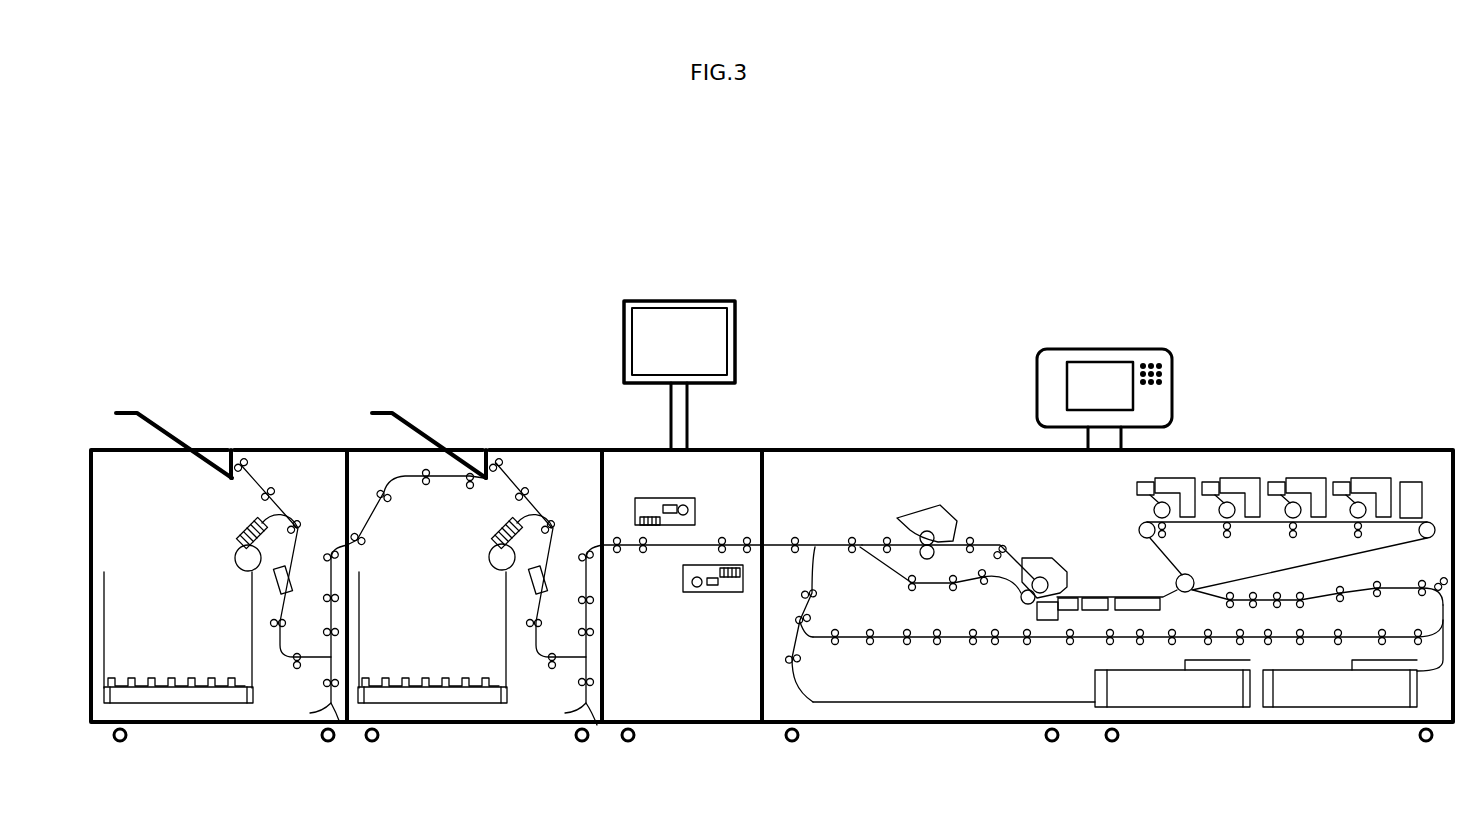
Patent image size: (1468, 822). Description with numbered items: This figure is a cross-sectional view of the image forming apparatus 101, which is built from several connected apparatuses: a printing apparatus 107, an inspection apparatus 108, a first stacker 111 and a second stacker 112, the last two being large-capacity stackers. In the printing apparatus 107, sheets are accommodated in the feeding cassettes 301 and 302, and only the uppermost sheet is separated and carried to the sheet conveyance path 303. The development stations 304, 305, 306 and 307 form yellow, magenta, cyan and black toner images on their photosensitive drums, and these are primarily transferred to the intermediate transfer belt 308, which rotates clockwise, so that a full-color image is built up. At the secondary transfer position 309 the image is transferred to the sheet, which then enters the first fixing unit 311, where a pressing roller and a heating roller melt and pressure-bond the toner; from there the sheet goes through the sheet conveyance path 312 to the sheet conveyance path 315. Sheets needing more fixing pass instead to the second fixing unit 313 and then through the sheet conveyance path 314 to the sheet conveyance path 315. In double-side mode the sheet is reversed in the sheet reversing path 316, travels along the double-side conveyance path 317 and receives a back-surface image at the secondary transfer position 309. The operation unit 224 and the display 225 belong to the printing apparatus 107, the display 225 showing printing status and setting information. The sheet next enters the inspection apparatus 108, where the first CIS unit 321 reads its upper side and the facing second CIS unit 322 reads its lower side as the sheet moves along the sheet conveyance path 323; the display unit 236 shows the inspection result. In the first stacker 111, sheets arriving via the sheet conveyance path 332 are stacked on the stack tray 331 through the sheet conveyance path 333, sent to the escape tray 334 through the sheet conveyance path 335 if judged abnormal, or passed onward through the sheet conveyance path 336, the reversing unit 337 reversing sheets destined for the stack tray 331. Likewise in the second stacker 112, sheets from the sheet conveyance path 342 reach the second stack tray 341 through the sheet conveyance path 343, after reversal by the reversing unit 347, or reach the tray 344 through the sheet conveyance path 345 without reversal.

The image forming apparatus 101 is at (265, 242).
The printing apparatus 107 is at (930, 723).
The inspection apparatus 108 is at (680, 723).
The first stacker 111 is at (430, 723).
The second stacker 112 is at (177, 723).
The operation unit 224 is at (1162, 373).
The display 225 is at (1068, 394).
The display unit 236 is at (678, 301).
The feeding cassette 301 is at (1183, 707).
The feeding cassette 302 is at (1340, 707).
The sheet conveyance path 303 is at (1360, 587).
The development station 304 is at (1408, 480).
The development station 305 is at (1402, 444).
The development station 306 is at (1330, 444).
The development station 307 is at (1178, 478).
The intermediate transfer belt 308 is at (1278, 576).
The secondary transfer position 309 is at (1177, 583).
The first fixing unit 311 is at (1038, 558).
The sheet conveyance path 312 is at (880, 562).
The second fixing unit 313 is at (922, 507).
The sheet conveyance path 314 is at (880, 543).
The sheet conveyance path 315 is at (777, 545).
The sheet reversing path 316 is at (832, 702).
The double-side conveyance path 317 is at (1055, 638).
The first CIS unit 321 is at (655, 498).
The second CIS unit 322 is at (712, 592).
The sheet conveyance path 323 is at (632, 550).
The stack tray 331 is at (360, 638).
The sheet conveyance path 332 is at (535, 657).
The sheet conveyance path 333 is at (525, 522).
The escape tray 334 is at (412, 427).
The sheet conveyance path 335 is at (514, 480).
The sheet conveyance path 336 is at (372, 515).
The reversing unit 337 is at (597, 725).
The second stack tray 341 is at (106, 638).
The sheet conveyance path 342 is at (280, 657).
The sheet conveyance path 343 is at (262, 518).
The tray 344 is at (158, 427).
The sheet conveyance path 345 is at (264, 482).
The reversing unit 347 is at (340, 723).